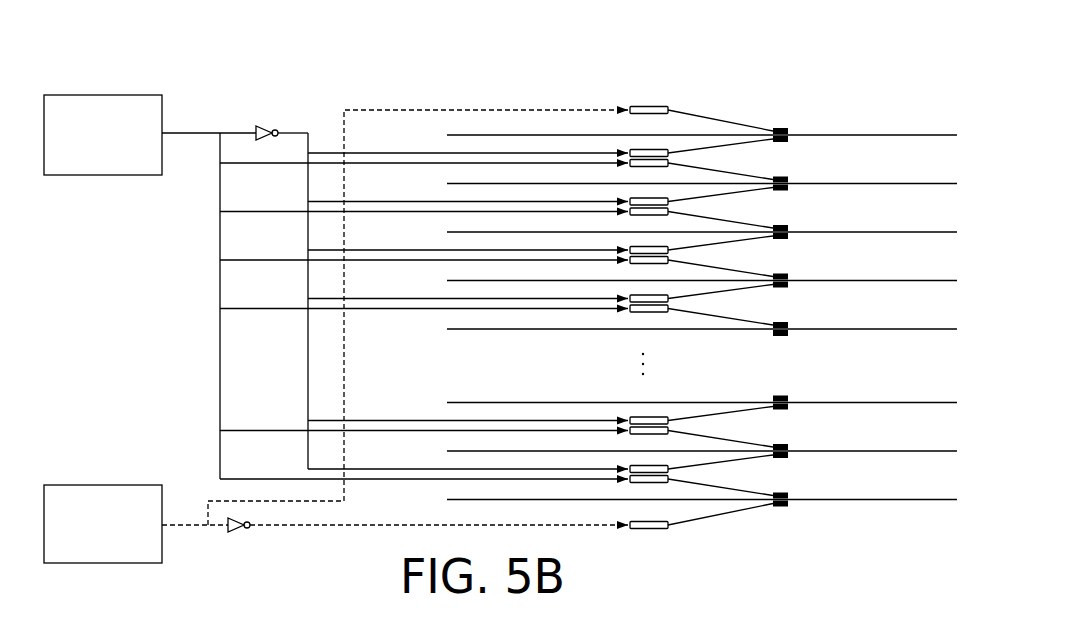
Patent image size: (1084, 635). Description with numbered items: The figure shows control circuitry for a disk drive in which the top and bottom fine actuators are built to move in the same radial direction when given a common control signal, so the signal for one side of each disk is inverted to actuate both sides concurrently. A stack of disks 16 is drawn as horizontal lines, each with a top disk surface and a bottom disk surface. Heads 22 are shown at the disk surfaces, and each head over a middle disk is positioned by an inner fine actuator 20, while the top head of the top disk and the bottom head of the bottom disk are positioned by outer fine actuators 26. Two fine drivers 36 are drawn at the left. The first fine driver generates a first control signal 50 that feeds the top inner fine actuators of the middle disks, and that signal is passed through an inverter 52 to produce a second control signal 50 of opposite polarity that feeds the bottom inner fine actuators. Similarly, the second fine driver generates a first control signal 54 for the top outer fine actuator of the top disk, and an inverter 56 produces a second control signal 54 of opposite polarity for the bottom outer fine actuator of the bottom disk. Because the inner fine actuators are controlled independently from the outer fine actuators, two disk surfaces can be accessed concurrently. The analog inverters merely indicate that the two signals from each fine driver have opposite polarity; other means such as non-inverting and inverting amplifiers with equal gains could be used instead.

The disk 16 is at (903, 134).
The inner fine actuator 20 is at (662, 152).
The head 22 is at (789, 140).
The outer fine actuator 26 is at (650, 561).
The fine driver 36 is at (107, 485).
The control signal 50 is at (297, 132).
The inverter 52 is at (264, 125).
The control signal 54 is at (285, 528).
The inverter 56 is at (238, 532).